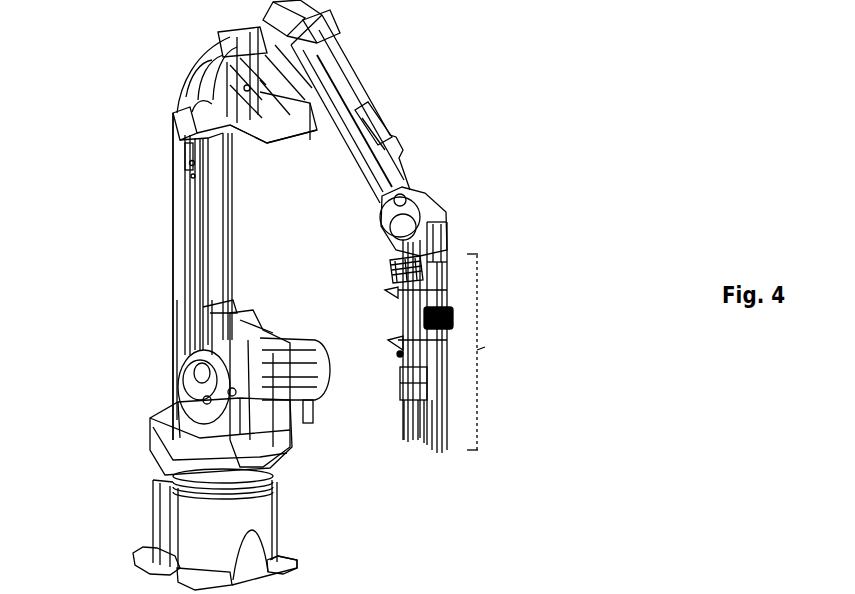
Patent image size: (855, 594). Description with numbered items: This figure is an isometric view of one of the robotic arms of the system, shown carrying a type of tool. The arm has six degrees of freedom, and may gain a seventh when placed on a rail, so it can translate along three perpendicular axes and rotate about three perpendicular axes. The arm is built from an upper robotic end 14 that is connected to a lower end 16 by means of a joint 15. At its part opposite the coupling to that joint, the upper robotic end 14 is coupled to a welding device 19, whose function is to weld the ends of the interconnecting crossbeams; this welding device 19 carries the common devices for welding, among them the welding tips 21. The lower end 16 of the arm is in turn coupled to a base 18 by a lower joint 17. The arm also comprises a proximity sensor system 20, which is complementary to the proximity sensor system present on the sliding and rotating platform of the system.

The upper robotic end 14 is at (357, 97).
The joint 15 is at (195, 75).
The lower end 16 is at (185, 255).
The lower joint 17 is at (202, 380).
The base 18 is at (195, 531).
The welding device 19 is at (520, 393).
The proximity sensor system 20 is at (460, 314).
The welding tips 21 is at (417, 457).